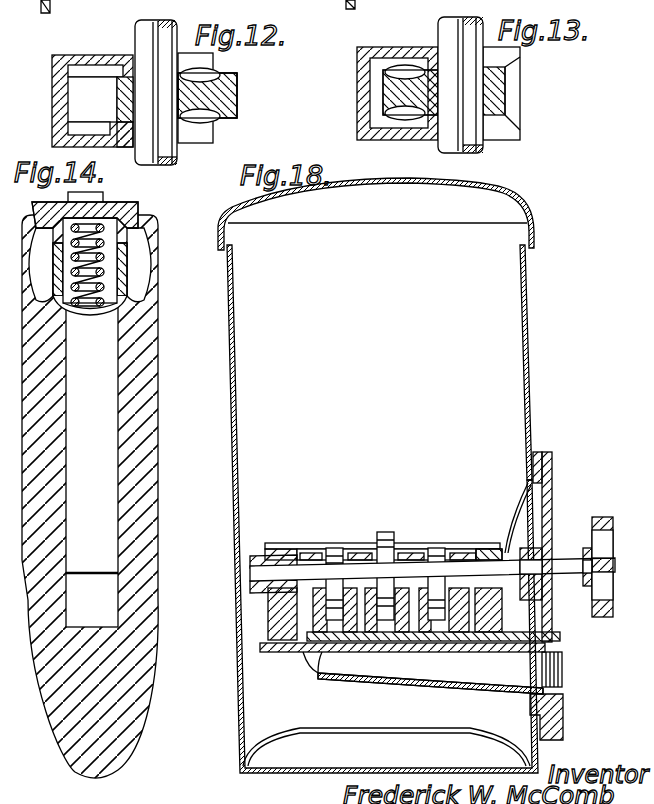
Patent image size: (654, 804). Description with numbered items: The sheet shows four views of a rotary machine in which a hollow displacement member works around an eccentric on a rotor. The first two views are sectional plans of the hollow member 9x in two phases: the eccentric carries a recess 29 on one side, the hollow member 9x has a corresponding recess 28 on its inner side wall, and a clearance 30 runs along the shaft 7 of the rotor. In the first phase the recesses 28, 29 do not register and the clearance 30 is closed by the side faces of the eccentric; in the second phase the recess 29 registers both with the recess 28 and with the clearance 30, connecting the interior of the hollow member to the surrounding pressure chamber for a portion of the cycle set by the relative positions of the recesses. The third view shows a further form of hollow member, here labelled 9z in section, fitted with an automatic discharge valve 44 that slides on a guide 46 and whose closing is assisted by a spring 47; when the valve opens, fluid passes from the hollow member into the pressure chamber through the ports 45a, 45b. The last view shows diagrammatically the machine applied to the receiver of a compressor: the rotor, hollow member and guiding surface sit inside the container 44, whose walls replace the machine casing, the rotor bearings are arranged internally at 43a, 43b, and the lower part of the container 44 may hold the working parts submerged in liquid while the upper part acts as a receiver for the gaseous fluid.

In FIG. 12, the shaft 7 is at (140, 31).
In FIG. 13, the shaft 7 is at (448, 30).
In FIG. 12, the recess 28 is at (80, 72).
In FIG. 12, the recess 29 is at (215, 75).
In FIG. 12, the hollow member 9x is at (130, 140).
In FIG. 12, the clearance 30 is at (140, 160).
In FIG. 13, the clearance 30 is at (437, 140).
In FIG. 14, the guide 46 is at (138, 205).
In FIG. 14, the spring 47 is at (117, 250).
In FIG. 14, the valve 44 is at (127, 278).
In FIG. 18, the valve 44 is at (529, 300).
In FIG. 14, the port 45b is at (148, 298).
In FIG. 14, the port 45a is at (40, 305).
In FIG. 14, the body 9z is at (150, 360).
In FIG. 18, the bearing 43a is at (290, 545).
In FIG. 18, the bearing 43b is at (485, 545).